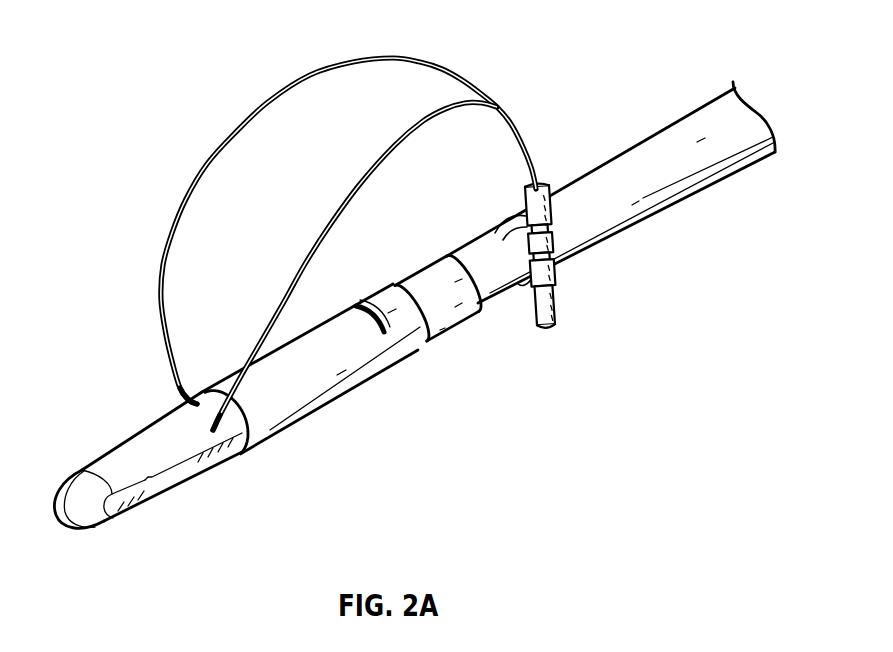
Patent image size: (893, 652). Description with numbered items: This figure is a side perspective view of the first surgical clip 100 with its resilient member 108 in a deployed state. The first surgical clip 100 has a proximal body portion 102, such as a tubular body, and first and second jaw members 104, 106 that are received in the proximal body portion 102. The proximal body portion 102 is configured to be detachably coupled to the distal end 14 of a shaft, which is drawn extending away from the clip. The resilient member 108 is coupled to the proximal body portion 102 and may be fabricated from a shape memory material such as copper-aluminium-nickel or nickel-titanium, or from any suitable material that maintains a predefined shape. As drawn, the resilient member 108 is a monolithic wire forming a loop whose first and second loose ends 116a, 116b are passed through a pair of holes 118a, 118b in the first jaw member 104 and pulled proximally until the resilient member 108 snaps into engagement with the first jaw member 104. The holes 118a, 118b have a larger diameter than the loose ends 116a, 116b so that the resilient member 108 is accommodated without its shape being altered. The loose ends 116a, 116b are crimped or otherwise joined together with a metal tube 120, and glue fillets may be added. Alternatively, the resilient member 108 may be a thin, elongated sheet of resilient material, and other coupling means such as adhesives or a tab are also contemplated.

The first surgical clip 100 is at (156, 154).
The proximal body portion 102 is at (380, 358).
The first jaw member 104 is at (128, 436).
The second jaw member 106 is at (183, 481).
The resilient member 108 is at (348, 215).
The first loose end 116a is at (373, 60).
The second loose end 116b is at (423, 118).
The first hole 118a is at (183, 399).
The second hole 118b is at (244, 438).
The metal tube 120 is at (556, 296).
The distal end 14 is at (710, 162).